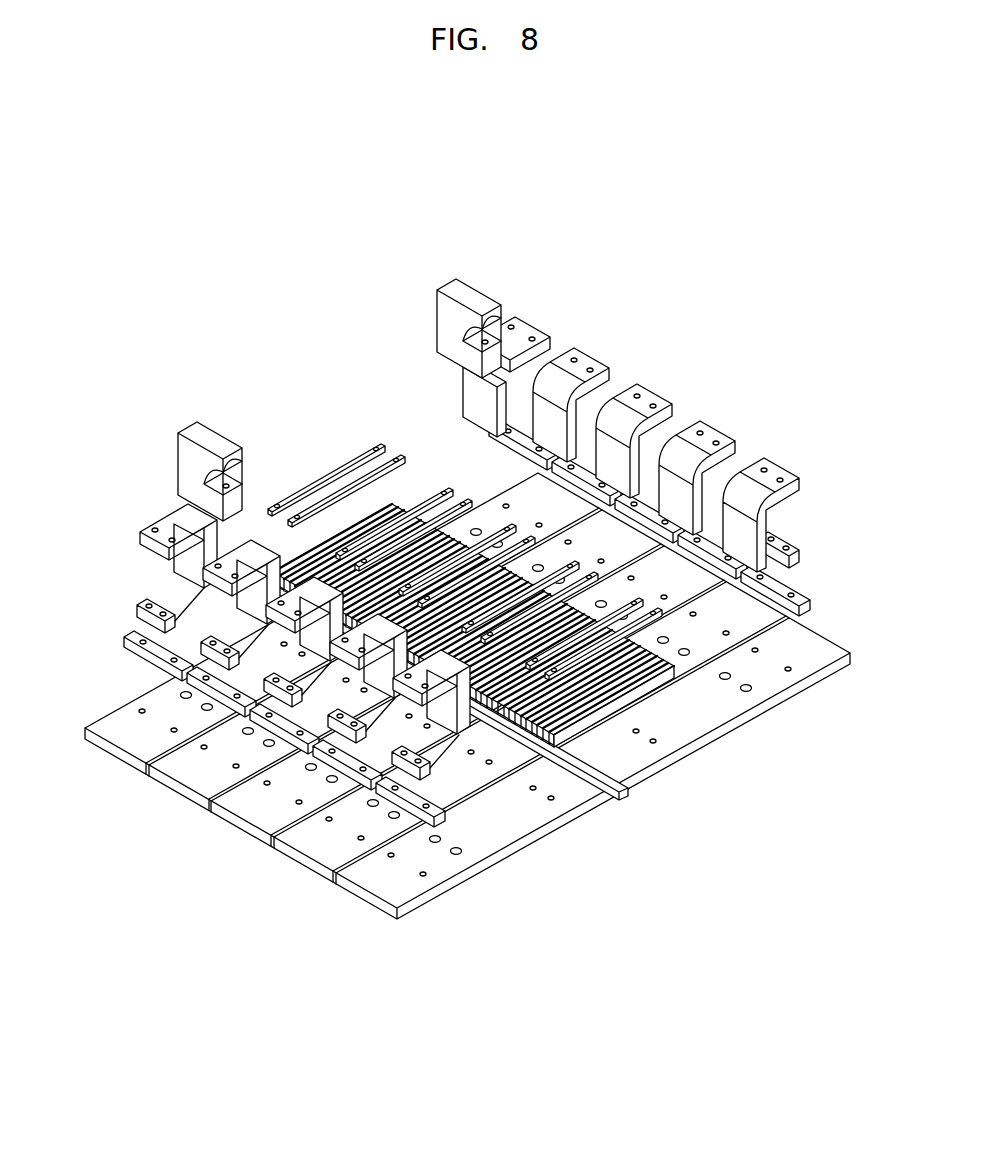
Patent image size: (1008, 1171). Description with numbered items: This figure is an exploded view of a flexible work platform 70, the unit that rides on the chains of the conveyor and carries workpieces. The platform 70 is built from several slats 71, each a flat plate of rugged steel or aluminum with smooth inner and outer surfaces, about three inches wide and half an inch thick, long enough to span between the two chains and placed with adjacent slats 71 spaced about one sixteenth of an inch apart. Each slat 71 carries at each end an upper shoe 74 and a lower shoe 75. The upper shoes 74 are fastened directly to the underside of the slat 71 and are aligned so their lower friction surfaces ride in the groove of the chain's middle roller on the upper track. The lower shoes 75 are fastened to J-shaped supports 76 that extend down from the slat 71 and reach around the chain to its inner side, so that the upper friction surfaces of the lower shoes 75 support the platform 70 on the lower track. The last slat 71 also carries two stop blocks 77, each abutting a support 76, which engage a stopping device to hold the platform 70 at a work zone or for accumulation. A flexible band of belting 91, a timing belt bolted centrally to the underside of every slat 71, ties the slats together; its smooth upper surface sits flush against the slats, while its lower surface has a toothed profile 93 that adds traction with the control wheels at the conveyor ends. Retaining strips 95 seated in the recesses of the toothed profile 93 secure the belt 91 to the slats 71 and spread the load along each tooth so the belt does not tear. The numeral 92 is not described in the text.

The flexible work platform 70 is at (569, 848).
The slat 71 is at (450, 777).
The upper shoe 74 is at (787, 587).
The lower shoe 75 is at (787, 538).
The J-shaped support 76 is at (788, 478).
The stop block 77 is at (475, 293).
The flexible band of belting 91 is at (643, 703).
The base rail 92 is at (588, 740).
The toothed profile 93 is at (672, 688).
The retaining strip 95 is at (360, 482).